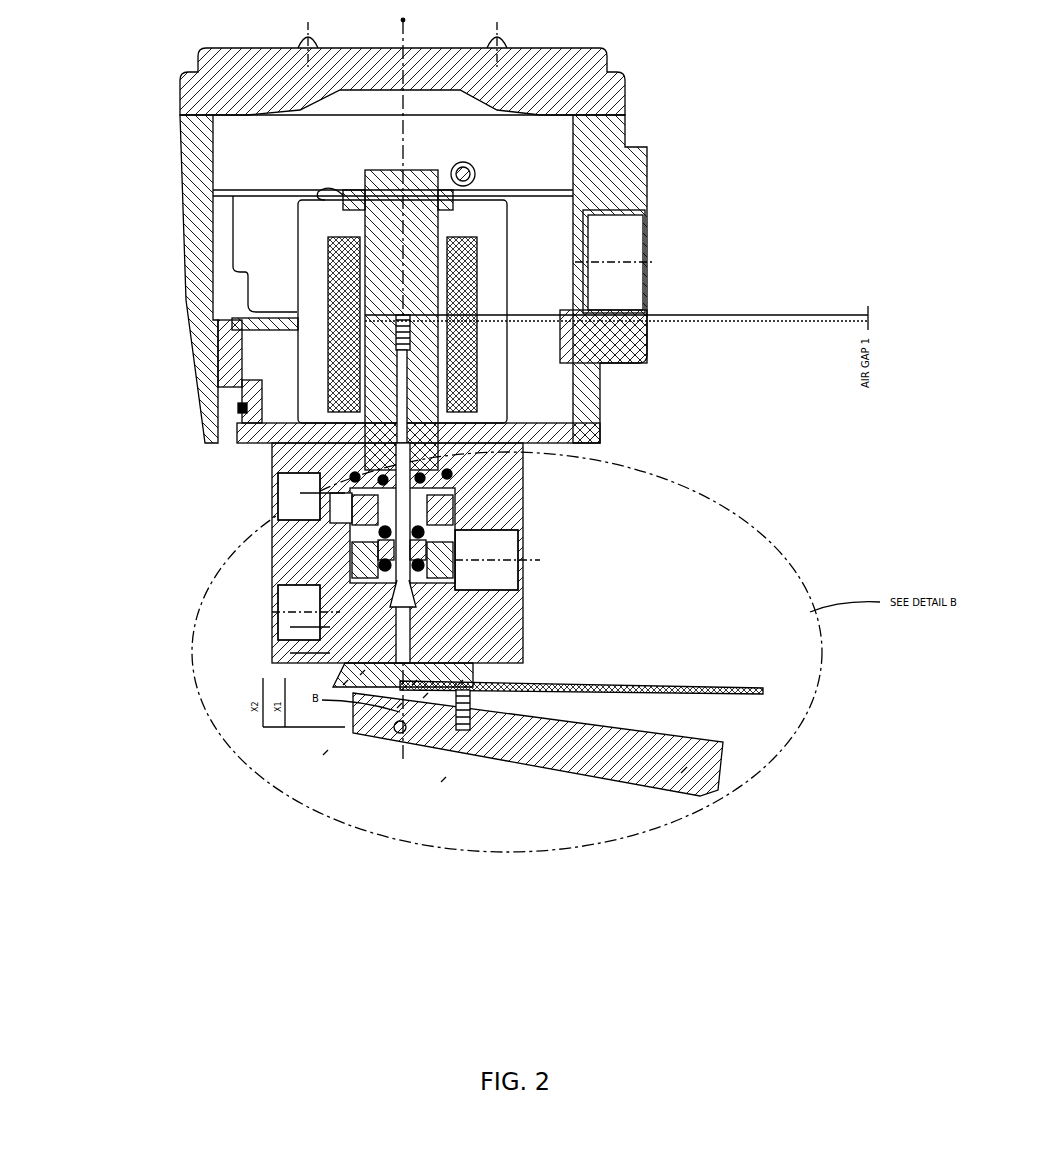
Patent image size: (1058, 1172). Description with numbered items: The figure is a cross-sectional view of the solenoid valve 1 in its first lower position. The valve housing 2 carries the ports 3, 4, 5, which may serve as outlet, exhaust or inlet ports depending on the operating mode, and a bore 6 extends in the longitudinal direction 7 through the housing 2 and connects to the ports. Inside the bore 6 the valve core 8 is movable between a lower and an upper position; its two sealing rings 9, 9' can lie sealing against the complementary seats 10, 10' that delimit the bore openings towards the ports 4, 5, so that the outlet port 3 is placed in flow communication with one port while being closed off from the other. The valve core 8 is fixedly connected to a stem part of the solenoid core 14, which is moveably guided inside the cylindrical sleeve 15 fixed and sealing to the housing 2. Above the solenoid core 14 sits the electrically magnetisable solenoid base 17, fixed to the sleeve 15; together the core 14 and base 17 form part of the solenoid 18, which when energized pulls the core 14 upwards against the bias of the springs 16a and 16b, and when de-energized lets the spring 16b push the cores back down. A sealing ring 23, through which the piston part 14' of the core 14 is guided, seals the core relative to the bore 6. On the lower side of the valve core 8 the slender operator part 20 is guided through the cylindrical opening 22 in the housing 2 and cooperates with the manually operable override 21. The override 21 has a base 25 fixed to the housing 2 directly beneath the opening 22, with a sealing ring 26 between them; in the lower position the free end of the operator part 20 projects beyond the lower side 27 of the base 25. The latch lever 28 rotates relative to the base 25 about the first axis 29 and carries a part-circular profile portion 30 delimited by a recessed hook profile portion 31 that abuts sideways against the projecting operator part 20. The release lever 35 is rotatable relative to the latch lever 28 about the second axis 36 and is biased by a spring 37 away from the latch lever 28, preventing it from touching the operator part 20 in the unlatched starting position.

The solenoid valve 1 is at (657, 88).
The valve housing 2 is at (523, 468).
The port 3 is at (500, 540).
The port 4 is at (290, 483).
The port 5 is at (290, 628).
The bore 6 is at (378, 551).
The longitudinal direction 7 is at (403, 20).
The valve core 8 is at (395, 557).
The sealing ring 9 is at (624, 524).
The sealing ring 9' is at (626, 565).
The seat 10 is at (251, 510).
The seat 10' is at (617, 590).
The solenoid core 14 is at (279, 309).
The piston part 14' is at (194, 493).
The cylindrical sleeve 15 is at (600, 370).
The spring 16a is at (297, 335).
The spring 16b is at (378, 543).
The solenoid base 17 is at (428, 230).
The solenoid 18 is at (492, 282).
The operator part 20 is at (470, 605).
The manually operable override 21 is at (446, 777).
The cylindrical opening 22 is at (768, 690).
The sealing ring 23 is at (470, 480).
The base 25 is at (348, 680).
The sealing ring 26 is at (290, 653).
The lower side 27 is at (365, 670).
The latch lever 28 is at (687, 767).
The first axis 29 is at (402, 703).
The part-circular profile portion 30 is at (328, 750).
The hook profile portion 31 is at (417, 680).
The release lever 35 is at (748, 730).
The second axis 36 is at (428, 693).
The spring 37 is at (463, 680).